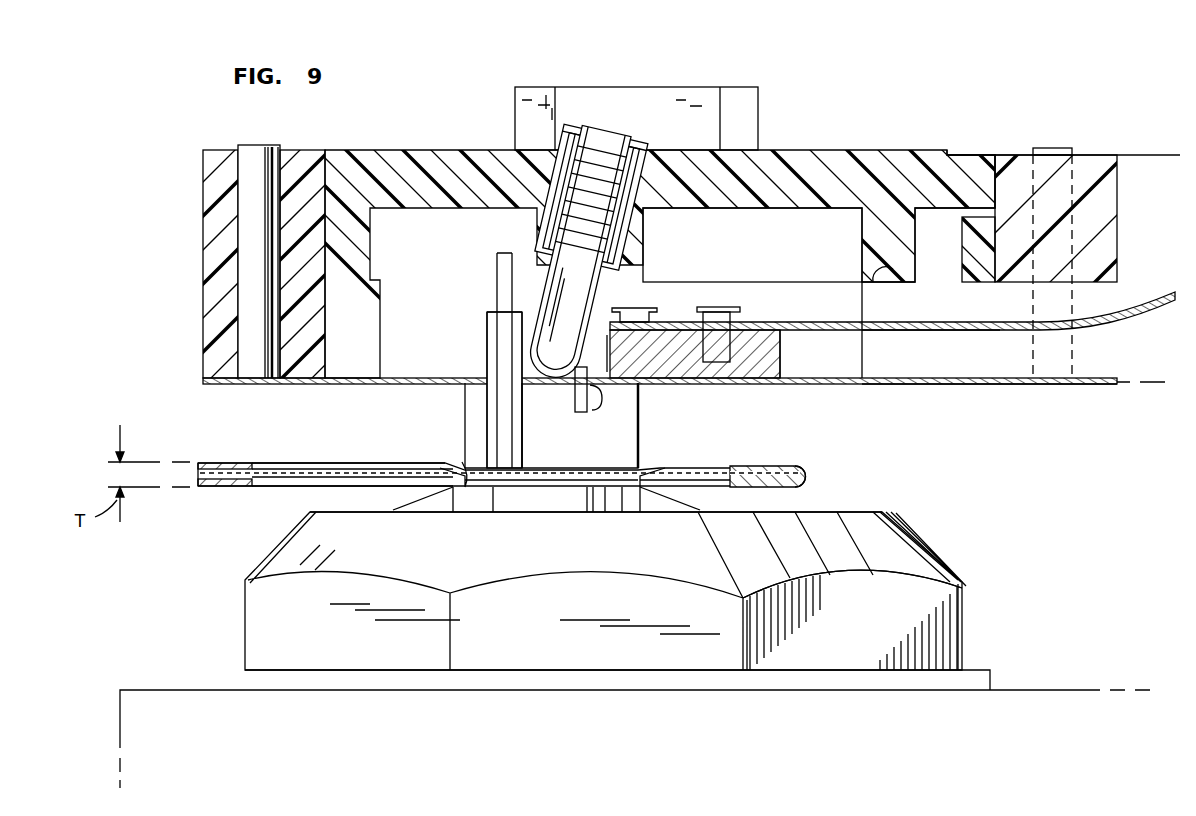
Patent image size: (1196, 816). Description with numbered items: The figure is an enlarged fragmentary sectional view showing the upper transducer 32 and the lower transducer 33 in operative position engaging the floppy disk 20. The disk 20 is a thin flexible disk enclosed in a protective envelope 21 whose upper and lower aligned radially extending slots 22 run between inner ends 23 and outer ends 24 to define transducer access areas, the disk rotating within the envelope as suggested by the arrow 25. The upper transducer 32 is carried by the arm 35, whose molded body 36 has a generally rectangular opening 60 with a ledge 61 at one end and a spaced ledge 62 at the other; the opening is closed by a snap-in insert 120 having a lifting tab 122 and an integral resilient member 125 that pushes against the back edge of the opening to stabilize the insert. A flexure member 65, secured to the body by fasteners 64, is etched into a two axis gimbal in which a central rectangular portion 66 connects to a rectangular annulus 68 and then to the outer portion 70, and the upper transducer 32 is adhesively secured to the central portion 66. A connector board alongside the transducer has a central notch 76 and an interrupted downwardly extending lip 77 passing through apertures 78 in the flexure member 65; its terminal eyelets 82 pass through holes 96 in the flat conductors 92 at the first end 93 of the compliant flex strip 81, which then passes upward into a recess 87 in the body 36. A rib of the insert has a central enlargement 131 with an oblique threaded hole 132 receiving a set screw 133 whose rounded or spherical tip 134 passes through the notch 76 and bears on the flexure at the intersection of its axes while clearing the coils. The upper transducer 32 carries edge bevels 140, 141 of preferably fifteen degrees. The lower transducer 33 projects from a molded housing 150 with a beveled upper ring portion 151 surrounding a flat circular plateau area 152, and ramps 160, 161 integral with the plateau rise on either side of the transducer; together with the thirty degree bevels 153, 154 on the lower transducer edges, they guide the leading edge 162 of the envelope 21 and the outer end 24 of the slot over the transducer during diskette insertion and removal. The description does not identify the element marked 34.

The disk 20 is at (316, 470).
The envelope 21 is at (206, 462).
The slots 22 is at (346, 462).
The inner ends 23 is at (251, 463).
The outer ends 24 is at (733, 466).
The arrow 25 is at (766, 356).
The upper transducer 32 is at (642, 410).
The lower transducer 33 is at (540, 506).
The base plate 34 is at (120, 686).
The arm 35 is at (200, 148).
The body portion 36 is at (1101, 158).
The opening 60 is at (339, 160).
The ledge 61 is at (378, 284).
The ledge 62 is at (884, 279).
The fasteners 64 is at (246, 236).
The flexure member 65 is at (990, 388).
The central rectangular portion 66 is at (755, 385).
The rectangular annulus 68 is at (412, 385).
The outer portion 70 is at (935, 387).
The central notch 76 is at (602, 340).
The lip 77 is at (598, 412).
The apertures 78 is at (572, 388).
The flex strip 81 is at (985, 332).
The eyelets 82 is at (709, 307).
The recess 87 is at (1138, 205).
The flat conductors 92 is at (922, 322).
The first end 93 is at (593, 353).
The holes 96 is at (736, 322).
The snap-in insert 120 is at (881, 148).
The lifting tab 122 is at (757, 88).
The resilient member 125 is at (984, 272).
The central enlargement 131 is at (646, 236).
The threaded hole 132 is at (594, 127).
The set screw 133 is at (621, 156).
The spherical tip 134 is at (530, 372).
The edge bevel 140 is at (466, 470).
The edge bevel 141 is at (641, 470).
The housing 150 is at (968, 588).
The upper ring portion 151 is at (932, 542).
The plateau area 152 is at (882, 512).
The bevel 153 is at (480, 493).
The beveled edge 154 is at (636, 490).
The ramp 160 is at (440, 498).
The ramp 161 is at (670, 506).
The leading edge 162 is at (808, 477).